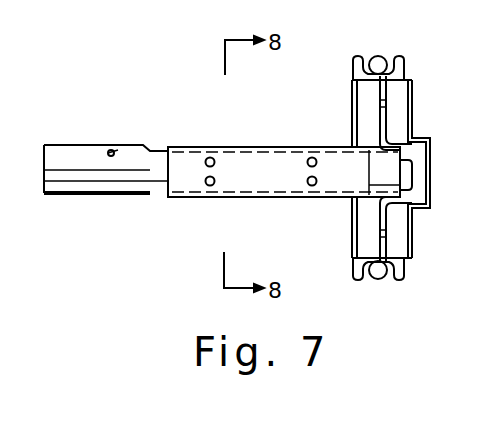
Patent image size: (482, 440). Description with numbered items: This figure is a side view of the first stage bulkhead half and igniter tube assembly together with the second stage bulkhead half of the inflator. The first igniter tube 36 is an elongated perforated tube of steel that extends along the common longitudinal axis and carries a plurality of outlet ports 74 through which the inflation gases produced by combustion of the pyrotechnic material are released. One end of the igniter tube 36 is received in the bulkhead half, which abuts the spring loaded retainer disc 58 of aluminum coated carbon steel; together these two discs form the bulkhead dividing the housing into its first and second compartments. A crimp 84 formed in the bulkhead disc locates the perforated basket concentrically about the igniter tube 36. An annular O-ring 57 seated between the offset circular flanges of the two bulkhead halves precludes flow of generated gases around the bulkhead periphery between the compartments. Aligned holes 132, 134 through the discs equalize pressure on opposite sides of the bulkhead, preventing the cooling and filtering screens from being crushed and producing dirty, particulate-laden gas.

The first igniter tube 36 is at (268, 163).
The outlet ports 74 is at (210, 157).
The spring loaded retainer disc 58 is at (405, 98).
The holes 132 is at (381, 107).
The holes 134 is at (388, 107).
The crimp 84 is at (358, 68).
The O-ring 57 is at (387, 277).